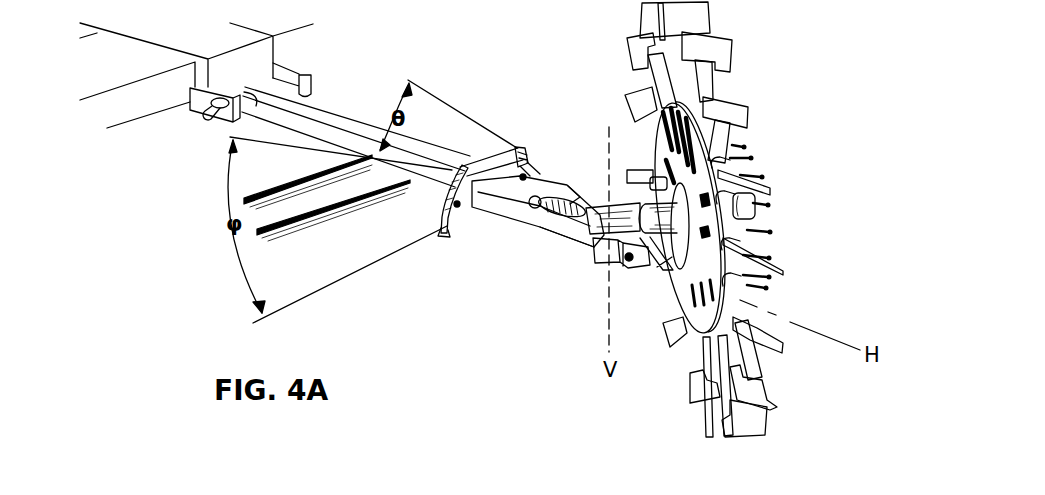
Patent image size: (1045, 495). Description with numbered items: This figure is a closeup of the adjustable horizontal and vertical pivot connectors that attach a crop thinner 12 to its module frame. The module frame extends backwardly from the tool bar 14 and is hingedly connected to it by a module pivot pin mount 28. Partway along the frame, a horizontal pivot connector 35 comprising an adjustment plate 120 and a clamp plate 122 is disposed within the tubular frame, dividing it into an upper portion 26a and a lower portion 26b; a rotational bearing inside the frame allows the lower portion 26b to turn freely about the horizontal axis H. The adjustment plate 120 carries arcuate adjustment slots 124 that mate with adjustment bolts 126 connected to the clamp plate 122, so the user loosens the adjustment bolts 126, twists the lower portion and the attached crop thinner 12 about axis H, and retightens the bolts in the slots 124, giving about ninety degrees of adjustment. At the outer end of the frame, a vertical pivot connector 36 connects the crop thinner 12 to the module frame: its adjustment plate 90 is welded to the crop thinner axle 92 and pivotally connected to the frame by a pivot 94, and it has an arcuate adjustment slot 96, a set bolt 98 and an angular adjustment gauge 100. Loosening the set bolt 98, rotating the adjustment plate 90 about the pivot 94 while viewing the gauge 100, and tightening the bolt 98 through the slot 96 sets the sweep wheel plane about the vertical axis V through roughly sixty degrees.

The crop thinner 12 is at (783, 190).
The tool bar 14 is at (157, 98).
The upper portion of module frame 26a is at (330, 112).
The lower portion of module frame 26b is at (548, 190).
The module pivot pin mount 28 is at (302, 68).
The horizontal pivot connector 35 is at (515, 143).
The vertical pivot connector 36 is at (541, 233).
The adjustment plate 90 is at (590, 258).
The crop thinner axle 92 is at (651, 272).
The pivot 94 is at (617, 263).
The arcuate adjustment slot 96 is at (566, 193).
The set bolt 98 is at (550, 230).
The angular adjustment gauge 100 is at (582, 196).
The adjustment plate 120 is at (445, 240).
The clamp plate 122 is at (498, 158).
The arcuate adjustment slots 124 is at (443, 200).
The adjustment bolts 126 is at (438, 222).